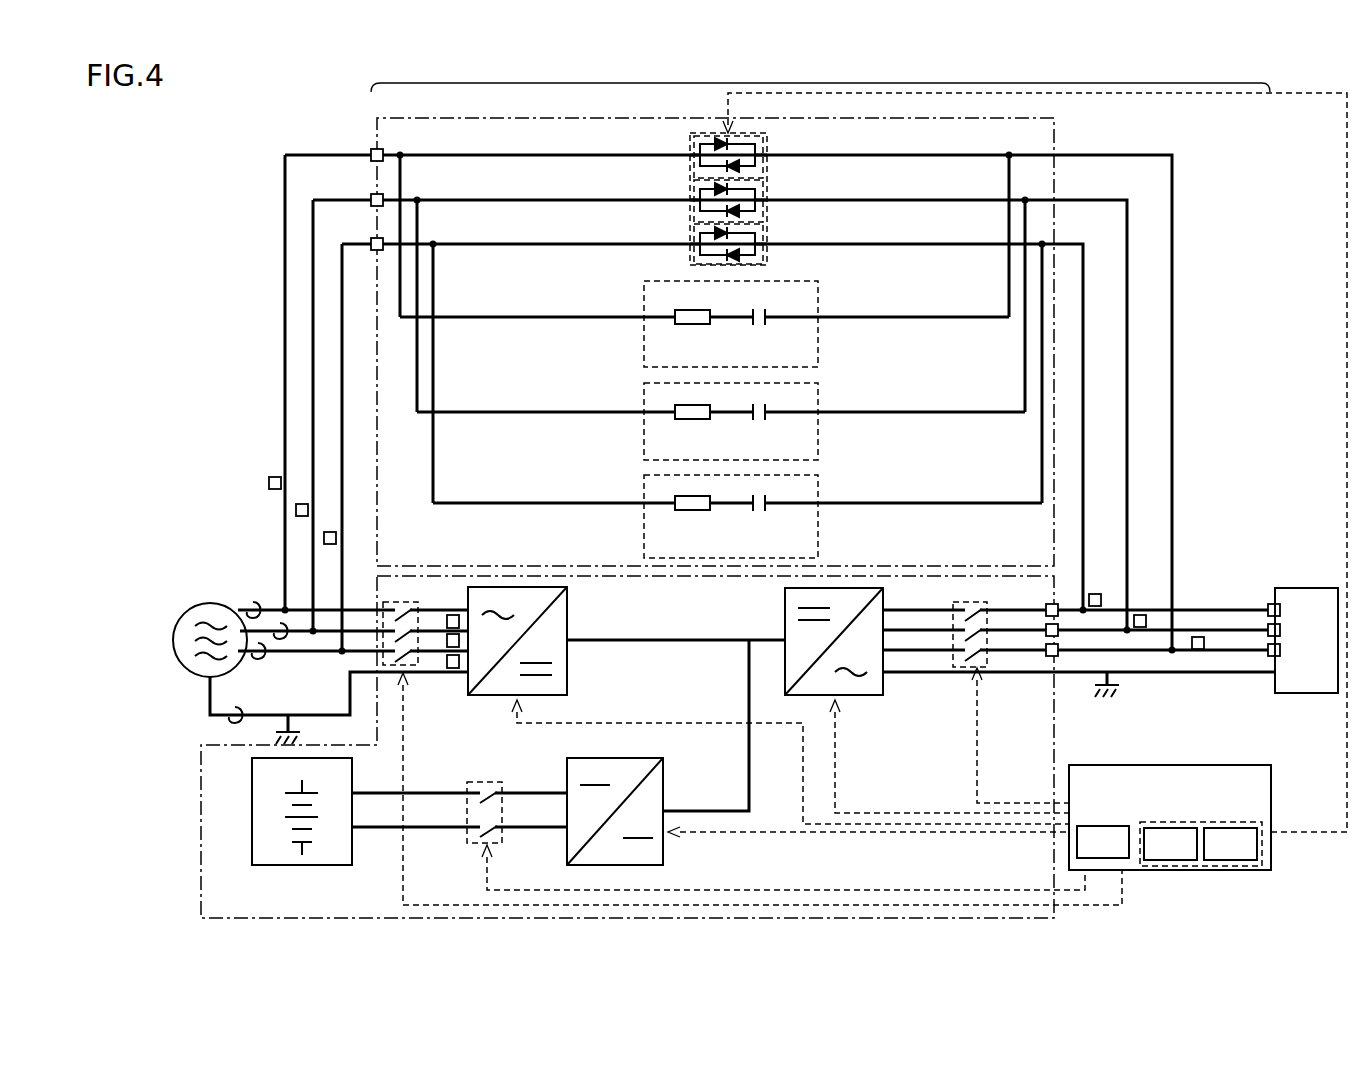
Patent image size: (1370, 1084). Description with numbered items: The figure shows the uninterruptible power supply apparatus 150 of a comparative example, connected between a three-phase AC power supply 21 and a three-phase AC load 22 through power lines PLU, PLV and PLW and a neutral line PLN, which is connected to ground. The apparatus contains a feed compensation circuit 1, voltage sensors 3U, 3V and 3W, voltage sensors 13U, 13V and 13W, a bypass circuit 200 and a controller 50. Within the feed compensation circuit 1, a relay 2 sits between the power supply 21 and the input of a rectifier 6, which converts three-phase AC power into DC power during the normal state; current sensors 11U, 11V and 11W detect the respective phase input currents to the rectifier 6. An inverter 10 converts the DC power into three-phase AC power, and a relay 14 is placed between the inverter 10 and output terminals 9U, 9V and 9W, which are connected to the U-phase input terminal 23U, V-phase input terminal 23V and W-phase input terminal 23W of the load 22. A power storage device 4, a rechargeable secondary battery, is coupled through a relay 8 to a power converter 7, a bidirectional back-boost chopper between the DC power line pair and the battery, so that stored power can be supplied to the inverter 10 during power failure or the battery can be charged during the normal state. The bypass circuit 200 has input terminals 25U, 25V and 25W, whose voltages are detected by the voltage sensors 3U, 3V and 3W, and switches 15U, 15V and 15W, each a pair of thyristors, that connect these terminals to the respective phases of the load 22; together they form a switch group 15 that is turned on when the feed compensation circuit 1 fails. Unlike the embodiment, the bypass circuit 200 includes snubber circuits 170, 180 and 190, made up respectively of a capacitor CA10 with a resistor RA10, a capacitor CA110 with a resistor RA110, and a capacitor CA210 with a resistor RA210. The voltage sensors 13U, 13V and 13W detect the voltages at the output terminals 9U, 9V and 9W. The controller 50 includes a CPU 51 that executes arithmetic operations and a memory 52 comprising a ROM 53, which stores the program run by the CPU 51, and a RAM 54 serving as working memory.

The feed compensation circuit 1 is at (635, 918).
The relay 2 is at (400, 622).
The voltage sensor 3U is at (269, 485).
The voltage sensor 3V is at (296, 513).
The voltage sensor 3W is at (324, 540).
The power storage device 4 is at (252, 815).
The rectifier 6 is at (568, 626).
The power converter 7 is at (634, 866).
The relay 8 is at (487, 782).
The output terminal 9U is at (1046, 650).
The output terminal 9V is at (1046, 628).
The output terminal 9W is at (1046, 608).
The inverter 10 is at (883, 606).
The current sensor 11U is at (451, 615).
The current sensor 11V is at (447, 641).
The current sensor 11W is at (452, 668).
The voltage sensor 13U is at (1198, 637).
The voltage sensor 13V is at (1140, 615).
The voltage sensor 13W is at (1096, 594).
The relay 14 is at (975, 602).
The switch group 15 is at (690, 151).
The switch 15U is at (767, 150).
The switch 15V is at (767, 195).
The switch 15W is at (767, 239).
The power supply 21 is at (173, 640).
The load 22 is at (1300, 588).
The U-phase input terminal 23U is at (1268, 650).
The V-phase input terminal 23V is at (1268, 628).
The W-phase input terminal 23W is at (1268, 608).
The input terminal 25U is at (372, 149).
The input terminal 25V is at (372, 194).
The input terminal 25W is at (372, 238).
The controller 50 is at (1215, 870).
The CPU 51 is at (1103, 826).
The memory 52 is at (1208, 822).
The ROM 53 is at (1168, 828).
The RAM 54 is at (1222, 828).
The uninterruptible power supply apparatus 150 is at (825, 83).
The snubber circuit 170 is at (818, 310).
The snubber circuit 180 is at (818, 440).
The snubber circuit 190 is at (818, 545).
The bypass circuit 200 is at (1054, 135).
The resistor RA10 is at (687, 329).
The capacitor CA10 is at (765, 329).
The resistor RA110 is at (687, 424).
The capacitor CA110 is at (768, 424).
The resistor RA210 is at (687, 516).
The capacitor CA210 is at (771, 516).
The power line PLU is at (255, 602).
The power line PLV is at (285, 640).
The power line PLW is at (262, 660).
The neutral line PLN is at (229, 723).